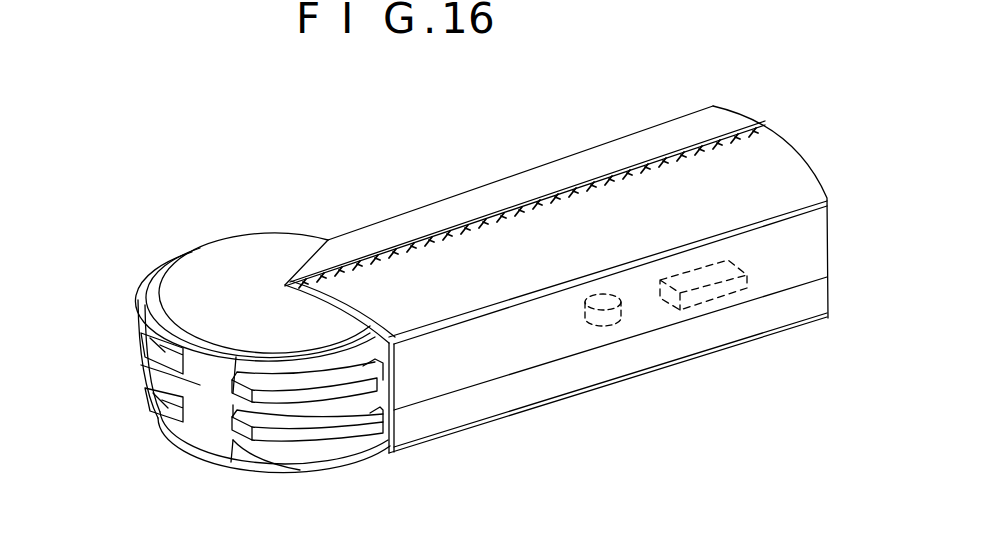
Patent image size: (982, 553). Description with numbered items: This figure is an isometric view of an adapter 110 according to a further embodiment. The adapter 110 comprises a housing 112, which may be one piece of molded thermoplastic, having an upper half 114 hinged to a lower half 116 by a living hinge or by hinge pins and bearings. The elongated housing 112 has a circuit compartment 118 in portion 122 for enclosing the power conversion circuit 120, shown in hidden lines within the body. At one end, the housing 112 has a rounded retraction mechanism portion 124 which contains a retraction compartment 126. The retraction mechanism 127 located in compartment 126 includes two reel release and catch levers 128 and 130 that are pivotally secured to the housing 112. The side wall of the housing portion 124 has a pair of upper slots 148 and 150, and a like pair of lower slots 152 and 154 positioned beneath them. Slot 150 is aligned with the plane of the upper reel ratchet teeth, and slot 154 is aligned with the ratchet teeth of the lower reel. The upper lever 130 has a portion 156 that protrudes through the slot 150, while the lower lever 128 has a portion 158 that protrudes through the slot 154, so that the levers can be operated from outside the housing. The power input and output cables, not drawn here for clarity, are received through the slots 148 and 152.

The adapter 110 is at (482, 142).
The housing 112 is at (625, 124).
The upper half 114 is at (792, 161).
The lower half 116 is at (549, 410).
The circuit compartment 118 is at (750, 275).
The power conversion circuit 120 is at (620, 318).
The housing portion 122 is at (390, 228).
The retraction mechanism portion 124 is at (179, 232).
The retraction compartment 126 is at (215, 405).
The retraction mechanism 127 is at (283, 475).
The lower reel release and catch lever 128 is at (317, 433).
The upper reel release and catch lever 130 is at (347, 390).
The upper slot 148 is at (140, 334).
The upper slot 150 is at (237, 372).
The lower slot 152 is at (153, 397).
The lower slot 154 is at (230, 443).
The upper lever portion 156 is at (376, 324).
The lower lever portion 158 is at (368, 419).